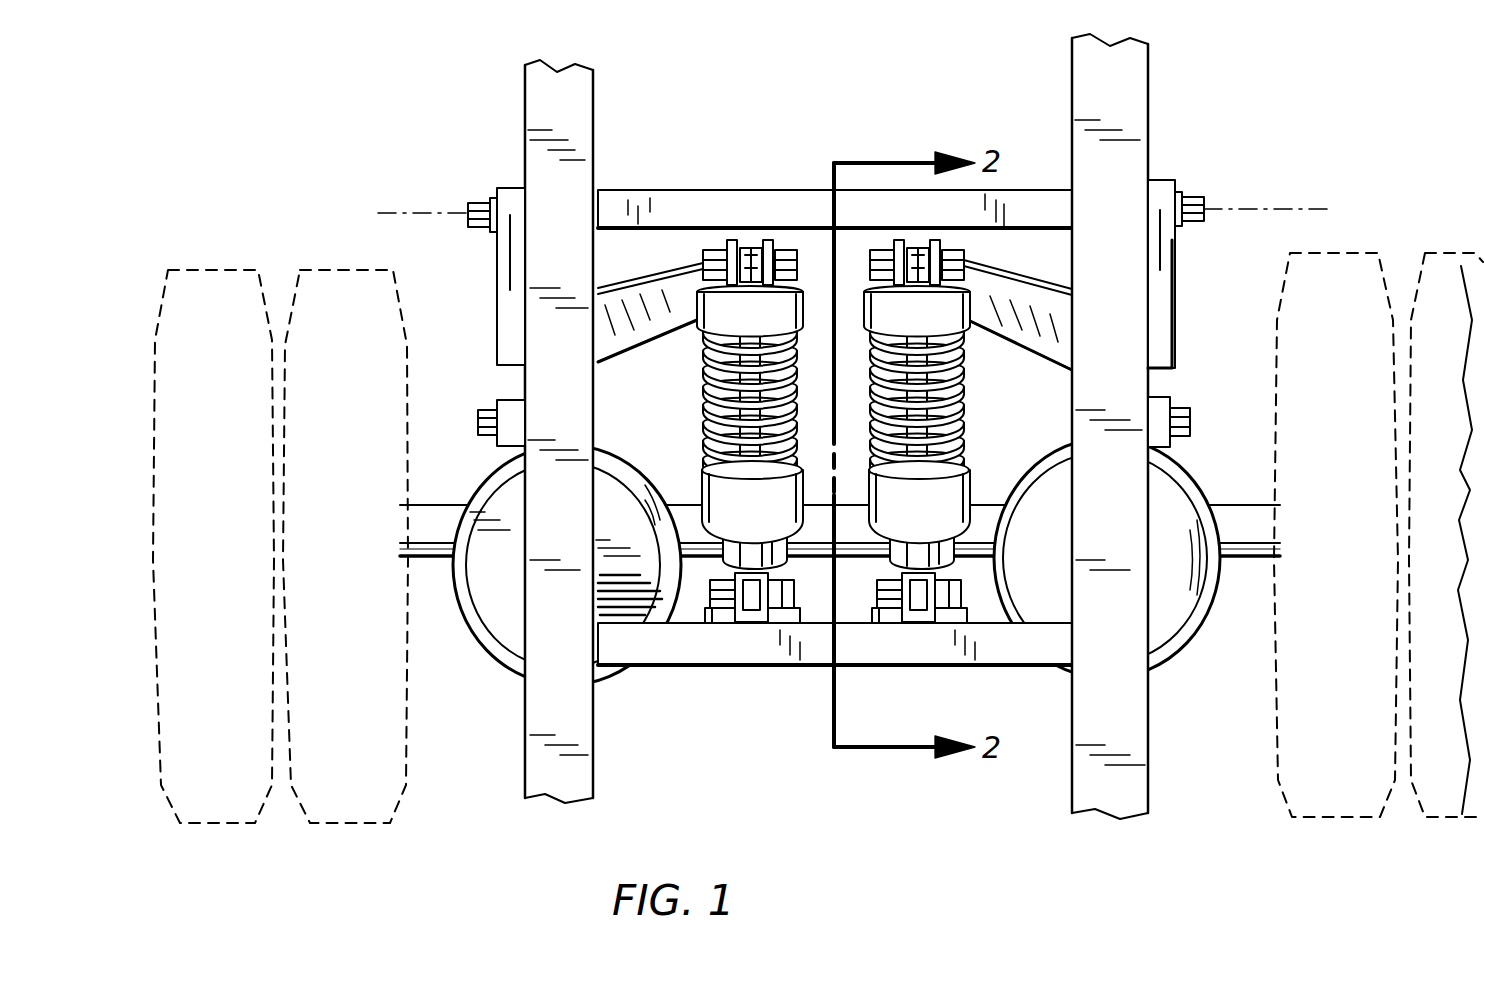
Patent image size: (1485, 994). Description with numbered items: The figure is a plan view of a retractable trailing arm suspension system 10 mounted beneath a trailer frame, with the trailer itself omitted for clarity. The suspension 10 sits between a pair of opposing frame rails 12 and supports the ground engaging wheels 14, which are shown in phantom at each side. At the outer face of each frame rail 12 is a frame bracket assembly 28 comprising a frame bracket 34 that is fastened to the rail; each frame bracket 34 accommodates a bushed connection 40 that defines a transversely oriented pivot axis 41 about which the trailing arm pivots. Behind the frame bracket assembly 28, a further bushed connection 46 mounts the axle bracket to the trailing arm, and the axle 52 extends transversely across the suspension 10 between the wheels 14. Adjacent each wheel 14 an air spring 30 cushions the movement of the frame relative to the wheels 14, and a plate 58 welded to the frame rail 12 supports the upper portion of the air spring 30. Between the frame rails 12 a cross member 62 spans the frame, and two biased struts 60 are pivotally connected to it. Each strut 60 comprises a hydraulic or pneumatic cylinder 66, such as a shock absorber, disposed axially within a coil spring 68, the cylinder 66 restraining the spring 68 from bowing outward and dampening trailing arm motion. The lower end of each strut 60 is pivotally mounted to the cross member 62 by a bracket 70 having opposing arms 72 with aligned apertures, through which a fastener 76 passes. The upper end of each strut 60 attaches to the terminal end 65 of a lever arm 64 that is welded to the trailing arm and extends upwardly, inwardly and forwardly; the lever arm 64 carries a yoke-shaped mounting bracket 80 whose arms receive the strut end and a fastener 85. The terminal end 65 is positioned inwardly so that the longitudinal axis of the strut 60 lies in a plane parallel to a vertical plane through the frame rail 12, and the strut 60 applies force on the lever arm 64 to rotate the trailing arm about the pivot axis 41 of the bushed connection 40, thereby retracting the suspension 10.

The trailing arm suspension system 10 is at (905, 103).
The frame rail 12 is at (597, 755).
The ground engaging wheel 14 is at (238, 825).
The frame bracket assembly 28 is at (853, 253).
The air spring 30 is at (478, 626).
The frame bracket 34 is at (500, 292).
The bushed connection 40 is at (470, 213).
The pivot axis 41 is at (386, 212).
The bushed connection 46 is at (485, 418).
The axle 52 is at (862, 500).
The plate 58 is at (528, 627).
The biased strut 60 is at (830, 420).
The cross member 62 is at (752, 192).
The lever arm 64 is at (1030, 318).
The terminal end 65 is at (768, 242).
The hydraulic or pneumatic cylinder 66 is at (840, 384).
The coil spring 68 is at (700, 368).
The bracket 70 is at (712, 612).
The bracket arm 72 is at (718, 588).
The fastener 76 is at (795, 600).
The mounting bracket 80 is at (728, 242).
The fastener 85 is at (703, 265).